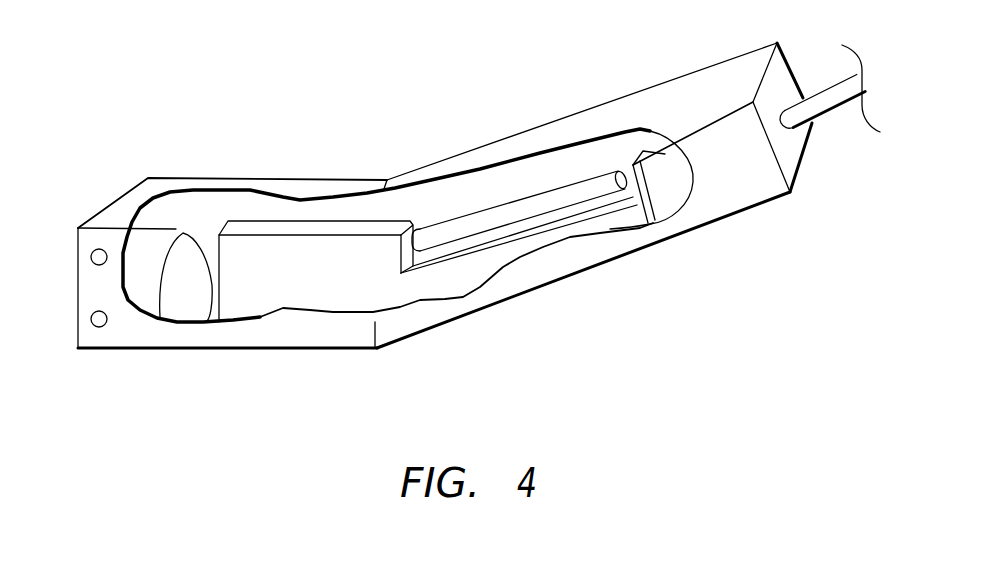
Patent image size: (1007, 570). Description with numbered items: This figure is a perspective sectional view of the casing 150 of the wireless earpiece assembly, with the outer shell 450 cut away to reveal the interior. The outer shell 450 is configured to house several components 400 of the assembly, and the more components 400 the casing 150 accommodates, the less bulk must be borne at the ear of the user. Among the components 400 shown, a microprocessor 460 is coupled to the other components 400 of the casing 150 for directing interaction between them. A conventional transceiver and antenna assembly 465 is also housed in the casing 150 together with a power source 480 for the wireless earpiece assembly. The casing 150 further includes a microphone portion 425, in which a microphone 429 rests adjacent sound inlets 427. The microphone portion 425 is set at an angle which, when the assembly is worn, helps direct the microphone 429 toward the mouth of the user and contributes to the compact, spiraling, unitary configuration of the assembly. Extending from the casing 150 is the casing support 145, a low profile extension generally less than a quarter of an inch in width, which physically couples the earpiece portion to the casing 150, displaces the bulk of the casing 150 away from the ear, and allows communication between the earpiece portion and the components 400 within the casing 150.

The casing 150 is at (437, 93).
The components 400 is at (213, 213).
The microphone portion 425 is at (223, 337).
The sound inlets 427 is at (99, 327).
The microphone 429 is at (155, 248).
The outer shell 450 is at (718, 88).
The microprocessor 460 is at (418, 295).
The transceiver and antenna assembly 465 is at (507, 218).
The power source 480 is at (665, 187).
The casing support 145 is at (822, 102).